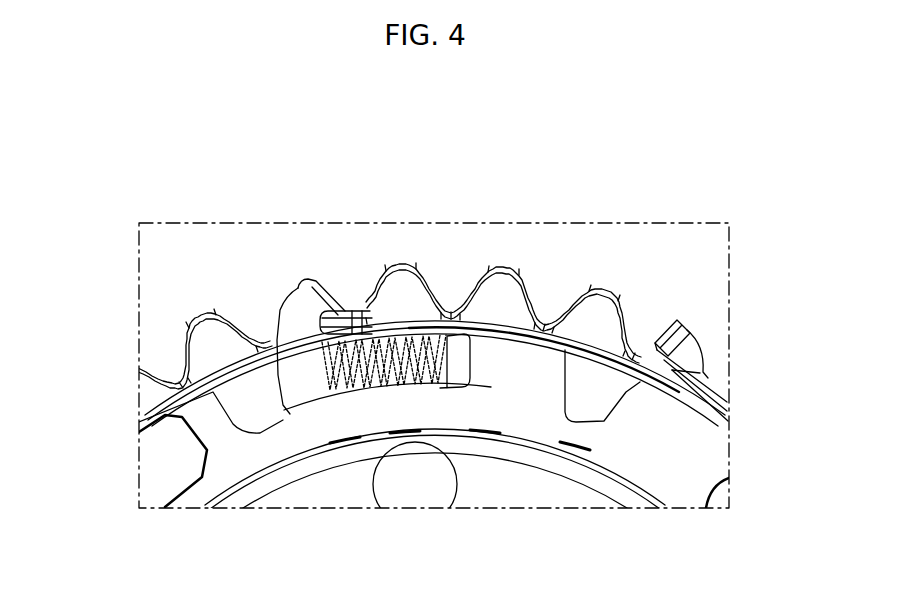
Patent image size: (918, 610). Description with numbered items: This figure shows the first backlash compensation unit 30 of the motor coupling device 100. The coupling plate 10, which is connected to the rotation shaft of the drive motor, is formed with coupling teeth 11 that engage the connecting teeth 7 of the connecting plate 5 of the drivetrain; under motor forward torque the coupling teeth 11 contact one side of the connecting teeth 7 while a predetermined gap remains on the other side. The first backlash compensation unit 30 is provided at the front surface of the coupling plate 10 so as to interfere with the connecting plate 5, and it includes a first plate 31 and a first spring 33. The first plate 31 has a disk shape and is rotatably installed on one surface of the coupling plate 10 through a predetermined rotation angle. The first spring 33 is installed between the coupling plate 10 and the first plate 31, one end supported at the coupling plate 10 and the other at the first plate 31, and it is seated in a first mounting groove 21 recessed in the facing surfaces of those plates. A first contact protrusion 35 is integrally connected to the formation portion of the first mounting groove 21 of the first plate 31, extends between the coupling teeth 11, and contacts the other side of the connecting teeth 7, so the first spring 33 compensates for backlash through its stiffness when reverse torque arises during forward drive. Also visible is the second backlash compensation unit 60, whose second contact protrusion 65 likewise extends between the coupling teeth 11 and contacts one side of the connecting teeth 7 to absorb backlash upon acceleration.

The motor coupling device 100 is at (377, 158).
The connecting plate 5 is at (299, 284).
The connecting teeth 7 is at (437, 277).
The coupling teeth 11 is at (503, 277).
The coupling plate 10 is at (545, 493).
The first mounting groove 21 is at (472, 355).
The first backlash compensation unit 30 is at (379, 373).
The first plate 31 is at (353, 415).
The first spring 33 is at (436, 388).
The first contact protrusion 35 is at (323, 282).
The second backlash compensation unit 60 is at (723, 356).
The second contact protrusion 65 is at (674, 323).